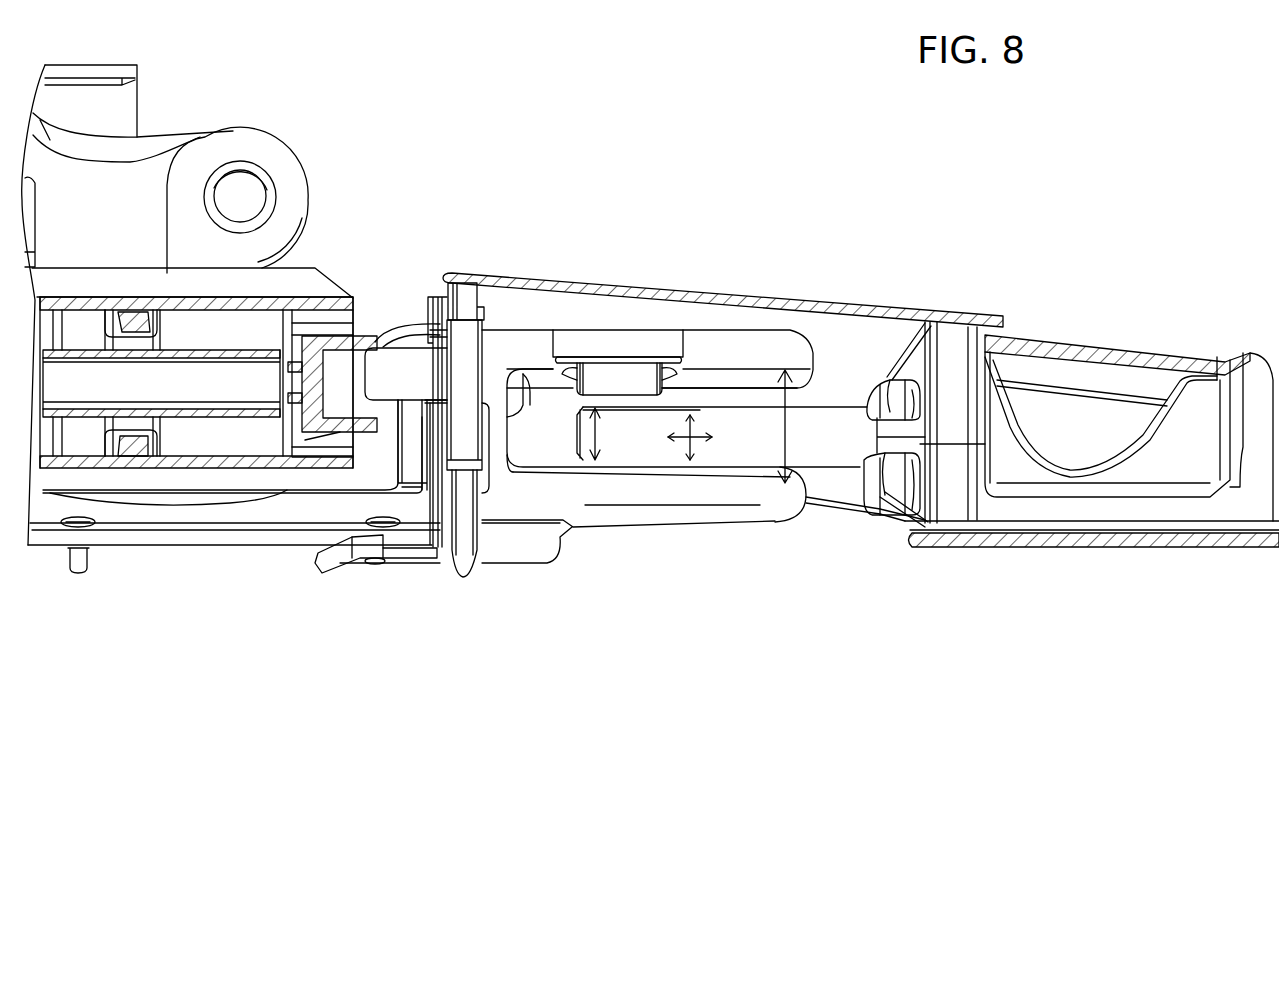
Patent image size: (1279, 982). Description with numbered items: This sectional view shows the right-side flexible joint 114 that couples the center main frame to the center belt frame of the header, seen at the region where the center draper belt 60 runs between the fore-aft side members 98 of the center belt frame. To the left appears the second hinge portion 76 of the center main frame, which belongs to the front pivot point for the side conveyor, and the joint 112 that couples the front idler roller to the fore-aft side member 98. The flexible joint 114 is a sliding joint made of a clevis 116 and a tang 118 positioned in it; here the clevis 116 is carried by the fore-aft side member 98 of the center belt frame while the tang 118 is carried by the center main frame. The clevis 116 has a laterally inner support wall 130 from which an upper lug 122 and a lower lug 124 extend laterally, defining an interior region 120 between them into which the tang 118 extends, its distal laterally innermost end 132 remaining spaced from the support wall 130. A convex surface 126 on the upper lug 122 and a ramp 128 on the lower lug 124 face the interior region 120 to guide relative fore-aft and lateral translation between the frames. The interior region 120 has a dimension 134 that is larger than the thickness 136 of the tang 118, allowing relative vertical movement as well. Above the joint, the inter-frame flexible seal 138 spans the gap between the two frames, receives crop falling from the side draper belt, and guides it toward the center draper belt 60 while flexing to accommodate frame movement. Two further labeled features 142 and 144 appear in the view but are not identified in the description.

The center draper belt 60 is at (108, 282).
The second hinge portion 76 is at (253, 140).
The fore-aft side member 98 is at (463, 553).
The joint 112 is at (358, 335).
The flexible joint 114 is at (596, 578).
The clevis 116 is at (753, 550).
The tang 118 is at (832, 453).
The interior region 120 is at (688, 346).
The upper lug 122 is at (718, 342).
The lower lug 124 is at (610, 493).
The convex surface 126 is at (730, 380).
The ramp 128 is at (667, 468).
The laterally inner support wall 130 is at (513, 424).
The distal, laterally innermost end 132 is at (577, 430).
The dimension 134 is at (788, 434).
The thickness 136 is at (596, 433).
The inter-frame flexible seal 138 is at (837, 307).
The movement arrows 142 is at (705, 425).
The guide block 144 is at (705, 358).